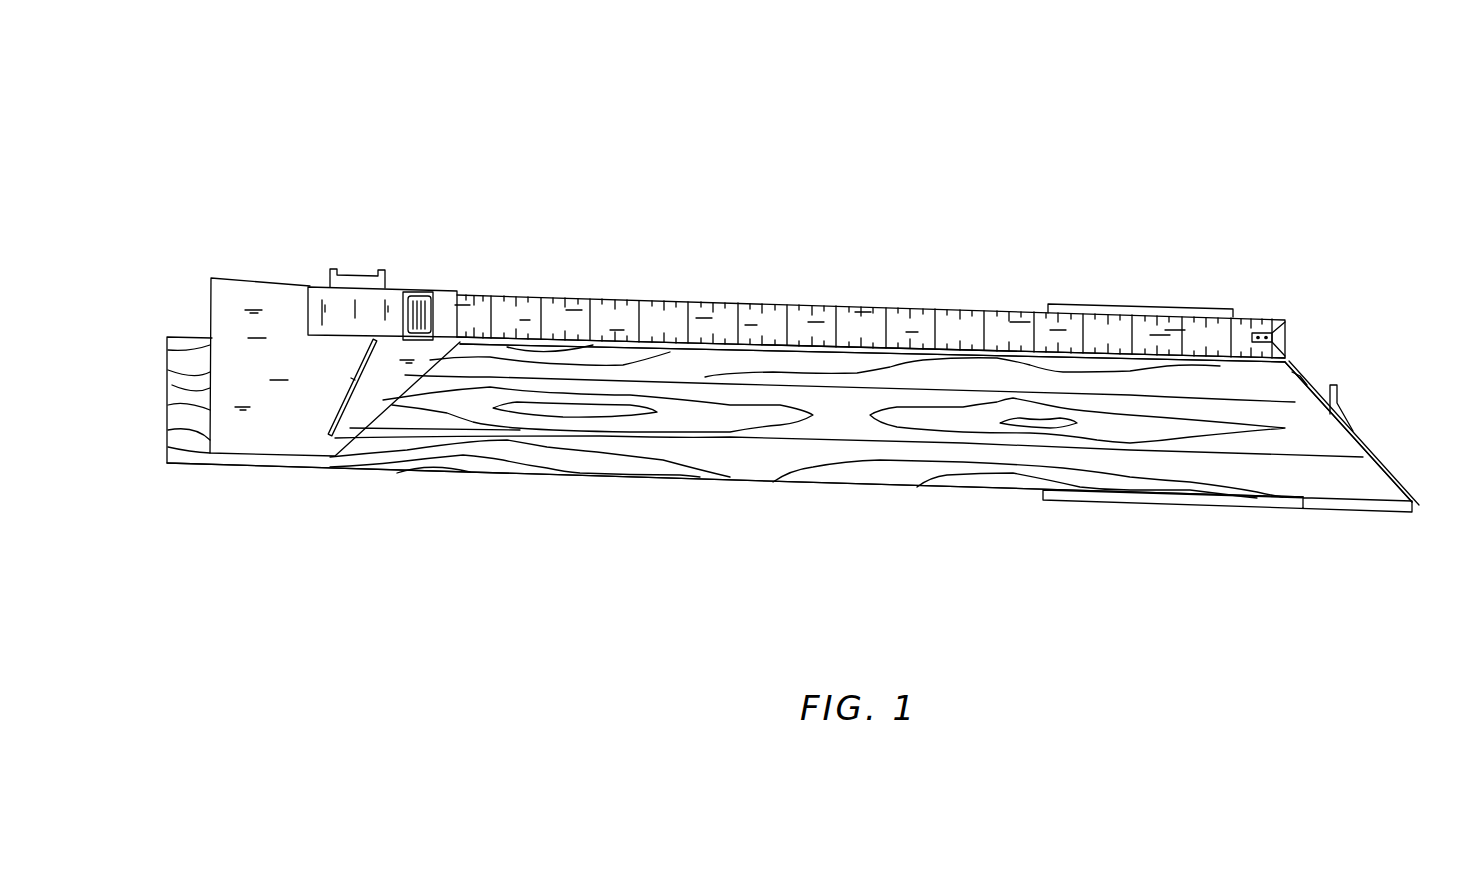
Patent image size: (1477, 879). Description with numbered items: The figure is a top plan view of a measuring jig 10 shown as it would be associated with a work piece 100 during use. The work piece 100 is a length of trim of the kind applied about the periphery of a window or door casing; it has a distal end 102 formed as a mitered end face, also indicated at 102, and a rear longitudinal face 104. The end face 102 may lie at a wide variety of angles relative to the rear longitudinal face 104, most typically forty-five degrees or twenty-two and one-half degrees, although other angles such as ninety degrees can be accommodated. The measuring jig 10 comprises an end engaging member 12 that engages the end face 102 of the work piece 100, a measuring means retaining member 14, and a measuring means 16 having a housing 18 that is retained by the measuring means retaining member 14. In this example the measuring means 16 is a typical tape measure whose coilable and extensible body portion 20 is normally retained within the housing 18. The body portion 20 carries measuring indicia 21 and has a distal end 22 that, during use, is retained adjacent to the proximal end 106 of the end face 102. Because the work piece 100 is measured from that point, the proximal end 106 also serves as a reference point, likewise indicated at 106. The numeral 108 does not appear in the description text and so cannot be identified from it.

The measuring jig 10 is at (788, 273).
The end engaging member 12 is at (1343, 363).
The measuring means retaining member 14 is at (222, 255).
The measuring means 16 is at (425, 275).
The housing 18 is at (370, 290).
The body portion 20 is at (877, 308).
The measuring indicia 21 is at (988, 336).
The distal end 22 is at (1285, 323).
The work piece 100 is at (592, 488).
The distal end / end face 102 is at (1400, 493).
The rear longitudinal face 104 is at (895, 486).
The proximal end / reference point 106 is at (1290, 362).
The board end 108 is at (185, 333).